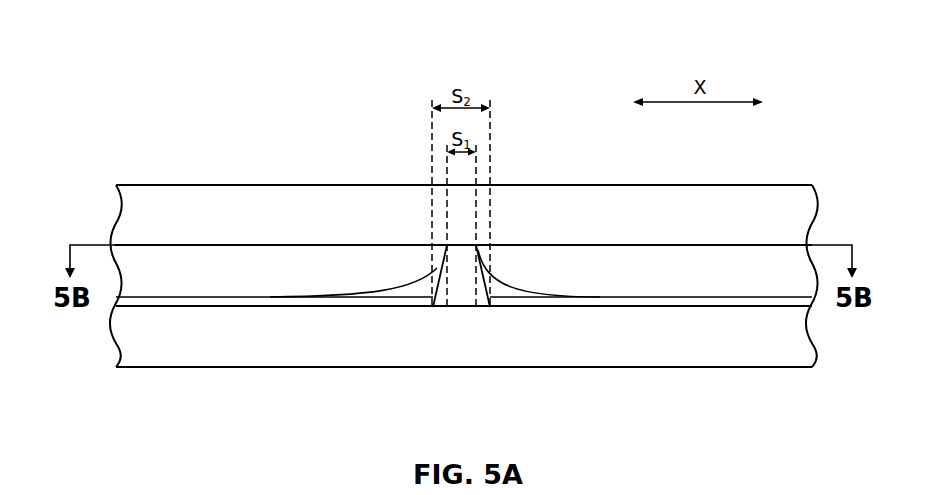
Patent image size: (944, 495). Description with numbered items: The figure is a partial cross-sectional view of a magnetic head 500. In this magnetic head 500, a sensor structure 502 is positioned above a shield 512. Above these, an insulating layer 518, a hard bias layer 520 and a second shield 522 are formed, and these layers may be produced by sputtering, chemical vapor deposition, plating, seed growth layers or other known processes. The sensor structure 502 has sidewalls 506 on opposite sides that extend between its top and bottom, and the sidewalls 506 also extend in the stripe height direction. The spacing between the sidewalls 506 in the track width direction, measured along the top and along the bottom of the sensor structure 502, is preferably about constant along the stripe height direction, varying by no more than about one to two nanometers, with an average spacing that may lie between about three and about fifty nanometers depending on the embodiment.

The magnetic head 500 is at (118, 77).
The second shield 522 is at (288, 224).
The hard bias layer 520 is at (207, 284).
The sidewalls 506 is at (424, 270).
The sensor structure 502 is at (483, 307).
The insulating layer 518 is at (217, 307).
The shield 512 is at (288, 348).